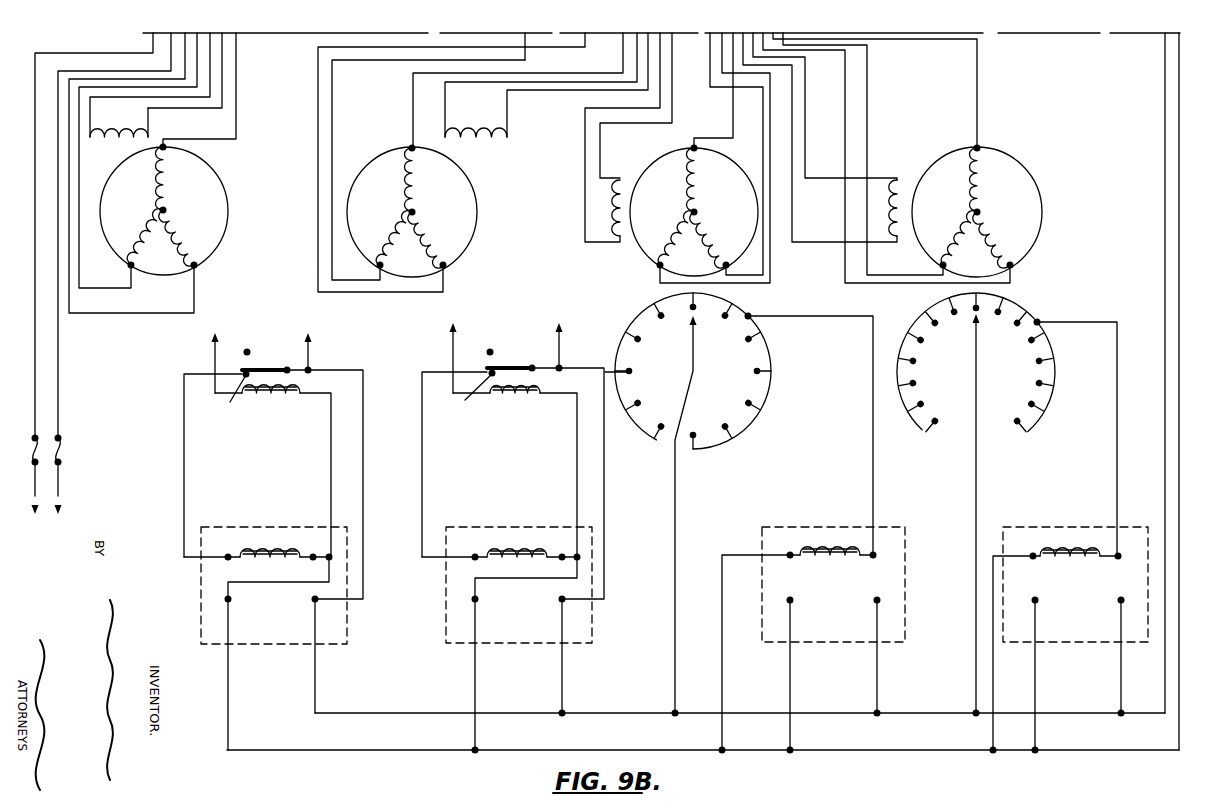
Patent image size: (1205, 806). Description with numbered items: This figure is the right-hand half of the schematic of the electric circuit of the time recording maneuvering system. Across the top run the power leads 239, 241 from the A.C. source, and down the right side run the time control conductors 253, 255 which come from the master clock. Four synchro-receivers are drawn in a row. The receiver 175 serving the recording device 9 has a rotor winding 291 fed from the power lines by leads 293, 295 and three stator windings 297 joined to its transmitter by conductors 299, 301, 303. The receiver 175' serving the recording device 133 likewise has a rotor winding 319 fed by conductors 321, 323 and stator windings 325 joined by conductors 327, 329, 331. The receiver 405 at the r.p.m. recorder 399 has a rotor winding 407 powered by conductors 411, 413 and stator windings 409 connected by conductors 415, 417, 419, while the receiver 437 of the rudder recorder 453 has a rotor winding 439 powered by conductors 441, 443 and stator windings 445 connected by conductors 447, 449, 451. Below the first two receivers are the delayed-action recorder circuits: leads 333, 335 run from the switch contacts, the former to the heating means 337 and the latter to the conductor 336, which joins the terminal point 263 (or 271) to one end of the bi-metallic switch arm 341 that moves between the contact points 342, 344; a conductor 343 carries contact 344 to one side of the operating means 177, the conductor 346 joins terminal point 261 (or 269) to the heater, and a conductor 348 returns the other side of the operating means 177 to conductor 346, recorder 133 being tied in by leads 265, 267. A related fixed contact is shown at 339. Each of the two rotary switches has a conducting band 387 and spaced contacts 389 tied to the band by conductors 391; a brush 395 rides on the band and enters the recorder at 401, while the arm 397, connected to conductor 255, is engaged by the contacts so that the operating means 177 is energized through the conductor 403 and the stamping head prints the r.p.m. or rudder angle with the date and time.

The recording device 9 is at (195, 565).
The recording device 133 is at (447, 565).
The synchro-receiver 175 is at (184, 210).
The synchro-receiver 175' is at (429, 211).
The recorder operating means 177 is at (265, 555).
The lead 239 is at (42, 44).
The lead 241 is at (92, 71).
The time control conductor 253 is at (1179, 170).
The time control conductor 255 is at (1165, 210).
The terminal point 261 is at (230, 601).
The terminal point 263 is at (313, 601).
The lead 265 is at (475, 678).
The lead 267 is at (562, 678).
The terminal point 269 is at (477, 601).
The terminal point 271 is at (560, 602).
The rotor winding 291 is at (119, 119).
The lead 293 is at (223, 73).
The lead 295 is at (210, 60).
The stator windings 297 is at (182, 213).
The conductor 299 is at (236, 101).
The conductor 301 is at (120, 313).
The conductor 303 is at (79, 277).
The rotor winding 319 is at (480, 140).
The conductor 321 is at (509, 112).
The conductor 323 is at (448, 103).
The stator windings 325 is at (427, 206).
The conductor 327 is at (318, 133).
The conductor 329 is at (413, 125).
The conductor 331 is at (332, 158).
The lead 333 is at (213, 360).
The lead 335 is at (311, 351).
The conductor 336 is at (350, 371).
The heating means 337 is at (265, 396).
The contact 339 is at (289, 367).
The bi-metallic switch arm 341 is at (268, 369).
The contact point 342 is at (247, 350).
The conductor 343 is at (186, 473).
The contact point 344 is at (351, 393).
The conductor 346 is at (577, 466).
The conductor 348 is at (313, 555).
The conducting band 387 is at (715, 450).
The contacts 389 is at (748, 429).
The conductors 391 is at (765, 344).
The brush 395 is at (808, 317).
The contact member 397 is at (694, 359).
The r.p.m. recorder 399 is at (907, 612).
The connection point 401 is at (876, 553).
The conductor 403 is at (722, 688).
The synchro-receiver 405 is at (830, 448).
The rotor winding 407 is at (618, 185).
The stator windings 409 is at (705, 210).
The conductor 411 is at (600, 145).
The conductor 413 is at (585, 177).
The conductor 415 is at (713, 40).
The conductor 417 is at (722, 68).
The conductor 419 is at (733, 112).
The synchro-receiver 437 is at (983, 211).
The rotor winding 439 is at (900, 182).
The conductor 441 is at (793, 217).
The conductor 443 is at (805, 115).
The stator windings 445 is at (988, 212).
The conductor 447 is at (847, 113).
The conductor 449 is at (867, 84).
The conductor 451 is at (977, 88).
The recorder 453 is at (1052, 522).